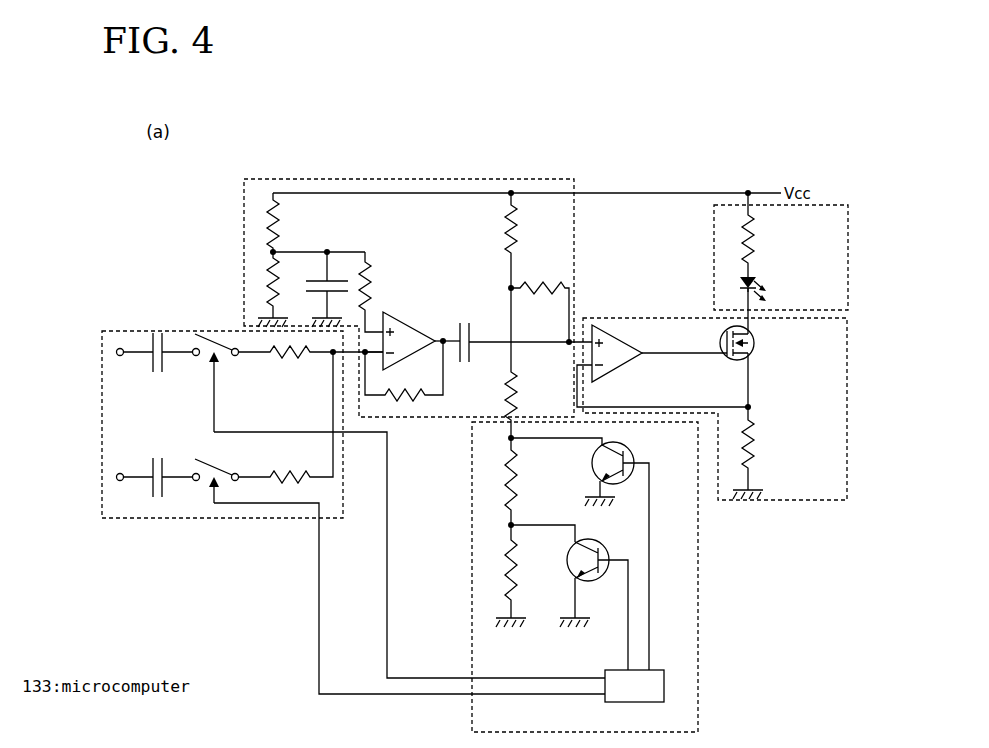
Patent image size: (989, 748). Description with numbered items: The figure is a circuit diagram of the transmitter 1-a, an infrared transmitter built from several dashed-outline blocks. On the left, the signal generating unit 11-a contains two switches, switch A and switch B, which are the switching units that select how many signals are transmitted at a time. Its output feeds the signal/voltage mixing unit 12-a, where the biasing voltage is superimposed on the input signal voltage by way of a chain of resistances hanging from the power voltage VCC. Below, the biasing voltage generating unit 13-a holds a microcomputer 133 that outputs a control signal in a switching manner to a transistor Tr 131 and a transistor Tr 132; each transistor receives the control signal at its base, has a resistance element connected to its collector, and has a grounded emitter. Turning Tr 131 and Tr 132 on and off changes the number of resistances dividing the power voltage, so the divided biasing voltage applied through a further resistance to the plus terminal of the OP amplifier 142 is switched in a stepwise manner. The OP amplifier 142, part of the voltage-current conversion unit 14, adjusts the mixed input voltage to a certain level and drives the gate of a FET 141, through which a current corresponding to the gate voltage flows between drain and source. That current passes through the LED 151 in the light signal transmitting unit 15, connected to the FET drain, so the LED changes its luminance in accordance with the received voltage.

The transmitter 1-a is at (319, 607).
The signal generating unit 11-a is at (200, 523).
The signal/voltage mixing unit 12-a is at (347, 178).
The biasing voltage generating unit 13-a is at (635, 577).
The voltage-current conversion unit 14 is at (712, 424).
The light signal transmitting unit 15 is at (781, 199).
The transistor Tr 131 is at (581, 547).
The transistor Tr 132 is at (569, 597).
The microcomputer 133 is at (627, 702).
The FET 141 is at (756, 349).
The OP amplifier 142 is at (662, 365).
The LED 151 is at (772, 289).